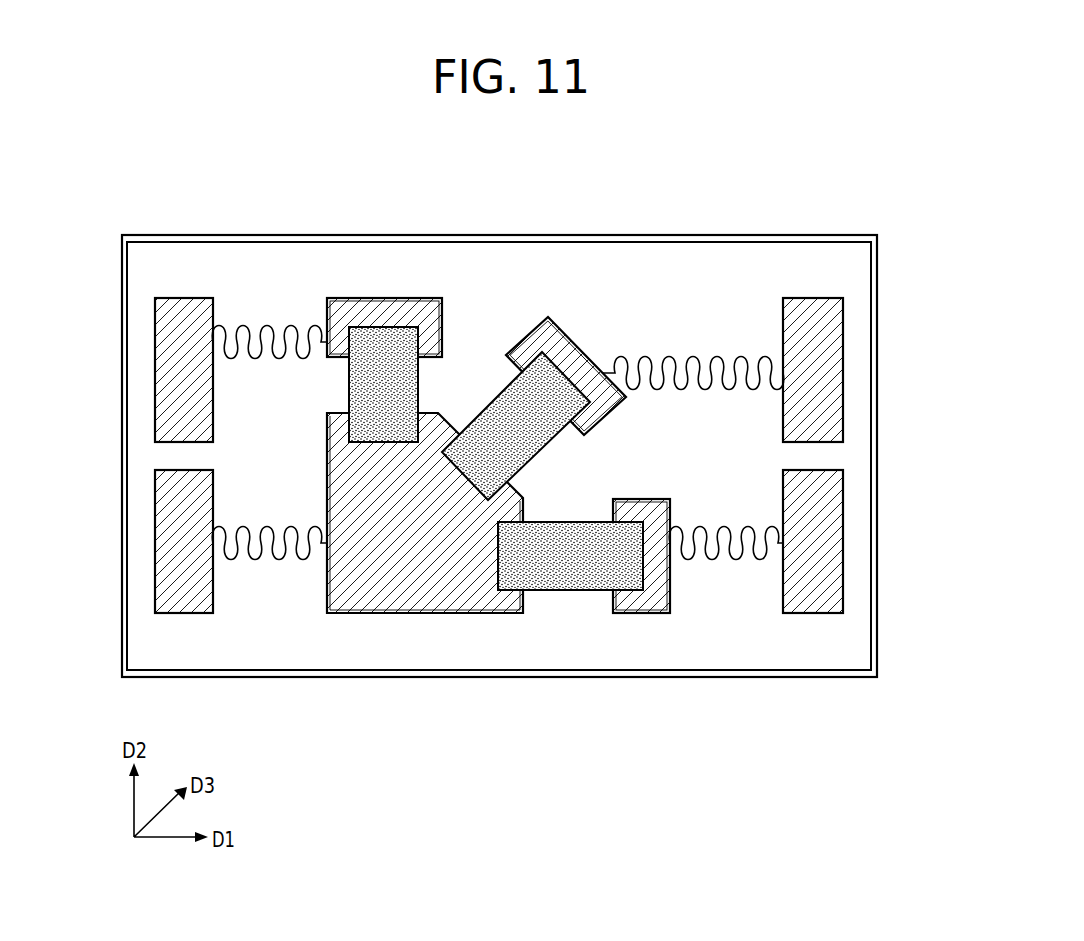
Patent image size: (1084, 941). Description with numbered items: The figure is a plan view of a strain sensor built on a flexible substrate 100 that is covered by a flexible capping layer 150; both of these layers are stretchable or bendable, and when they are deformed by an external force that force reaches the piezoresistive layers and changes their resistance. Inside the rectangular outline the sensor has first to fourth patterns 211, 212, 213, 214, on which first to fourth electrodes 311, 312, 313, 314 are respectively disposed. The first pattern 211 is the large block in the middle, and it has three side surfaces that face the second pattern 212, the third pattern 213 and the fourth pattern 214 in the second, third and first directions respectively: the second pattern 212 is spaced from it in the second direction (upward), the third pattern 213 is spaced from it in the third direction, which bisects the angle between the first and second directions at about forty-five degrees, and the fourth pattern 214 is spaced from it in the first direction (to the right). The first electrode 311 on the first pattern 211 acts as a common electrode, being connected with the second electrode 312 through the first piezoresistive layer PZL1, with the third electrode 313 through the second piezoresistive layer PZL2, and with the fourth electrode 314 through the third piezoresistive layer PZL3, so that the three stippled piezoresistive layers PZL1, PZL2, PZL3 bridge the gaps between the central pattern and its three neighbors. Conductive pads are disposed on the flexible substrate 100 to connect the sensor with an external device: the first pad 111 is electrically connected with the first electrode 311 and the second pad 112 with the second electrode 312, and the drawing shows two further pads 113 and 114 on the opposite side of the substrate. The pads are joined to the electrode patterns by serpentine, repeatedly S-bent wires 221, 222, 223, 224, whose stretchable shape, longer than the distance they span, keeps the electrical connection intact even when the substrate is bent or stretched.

The flexible substrate 100 is at (873, 273).
The flexible capping layer 150 is at (855, 305).
The first pad 111 is at (165, 540).
The second pad 112 is at (167, 367).
The third electrode pad 113 is at (833, 363).
The fourth electrode pad 114 is at (833, 540).
The first pattern 211 is at (443, 612).
The second pattern 212 is at (345, 298).
The third pattern 213 is at (520, 317).
The fourth pattern 214 is at (662, 613).
The first elastic member 221 is at (272, 558).
The second elastic member 222 is at (267, 327).
The third elastic member 223 is at (740, 357).
The fourth elastic member 224 is at (753, 558).
The first electrode 311 is at (385, 600).
The second electrode 312 is at (415, 298).
The third electrode 313 is at (581, 370).
The fourth electrode 314 is at (643, 602).
The first piezoresistive layer PZL1 is at (373, 340).
The second piezoresistive layer PZL2 is at (553, 387).
The third piezoresistive layer PZL3 is at (577, 578).